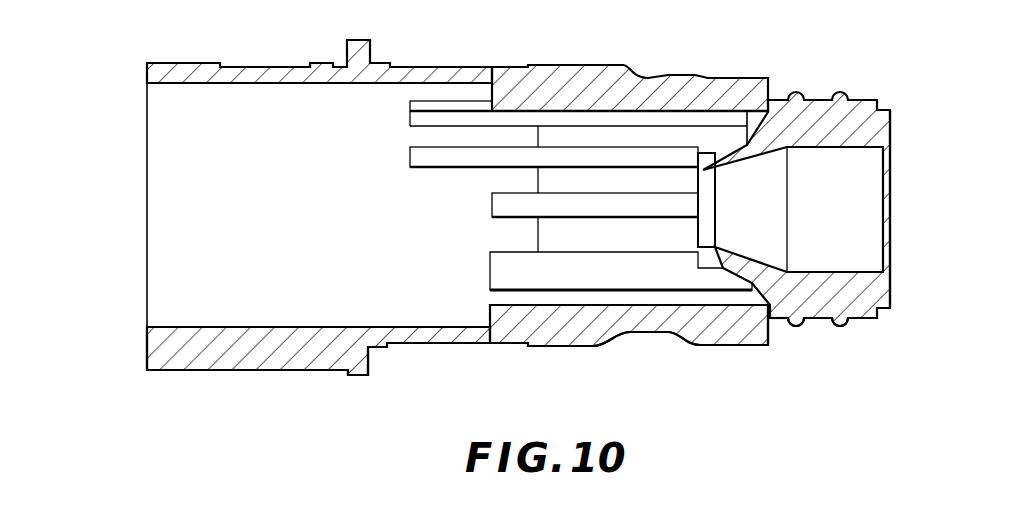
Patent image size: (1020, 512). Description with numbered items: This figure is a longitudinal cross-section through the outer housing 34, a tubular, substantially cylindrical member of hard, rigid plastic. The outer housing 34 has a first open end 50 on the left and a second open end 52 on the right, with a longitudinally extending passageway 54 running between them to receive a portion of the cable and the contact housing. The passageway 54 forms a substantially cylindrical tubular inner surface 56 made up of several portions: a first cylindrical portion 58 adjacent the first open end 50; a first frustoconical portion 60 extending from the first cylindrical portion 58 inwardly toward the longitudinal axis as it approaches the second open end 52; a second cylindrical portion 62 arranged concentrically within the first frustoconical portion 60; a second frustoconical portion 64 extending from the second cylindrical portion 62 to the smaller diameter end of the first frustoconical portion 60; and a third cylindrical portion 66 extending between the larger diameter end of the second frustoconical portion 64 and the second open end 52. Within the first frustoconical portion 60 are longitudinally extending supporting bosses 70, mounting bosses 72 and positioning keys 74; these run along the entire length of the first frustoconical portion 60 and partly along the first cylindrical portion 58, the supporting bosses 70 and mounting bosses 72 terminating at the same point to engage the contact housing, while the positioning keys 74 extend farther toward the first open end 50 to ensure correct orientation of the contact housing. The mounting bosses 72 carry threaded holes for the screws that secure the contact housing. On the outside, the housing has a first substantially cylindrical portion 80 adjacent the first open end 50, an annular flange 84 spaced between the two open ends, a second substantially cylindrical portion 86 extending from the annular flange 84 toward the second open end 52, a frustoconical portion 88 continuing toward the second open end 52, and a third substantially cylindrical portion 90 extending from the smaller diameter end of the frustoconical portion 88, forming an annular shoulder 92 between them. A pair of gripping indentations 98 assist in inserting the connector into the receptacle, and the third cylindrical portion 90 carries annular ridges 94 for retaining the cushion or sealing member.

The outer housing 34 is at (428, 226).
The first open end 50 is at (135, 352).
The second open end 52 is at (901, 272).
The longitudinally extending passageway 54 is at (166, 244).
The tubular inner surface 56 is at (220, 84).
The first cylindrical portion 58 is at (226, 327).
The first frustoconical portion 60 is at (652, 112).
The second cylindrical portion 62 is at (707, 172).
The second frustoconical portion 64 is at (758, 160).
The third cylindrical portion 66 is at (867, 148).
The supporting bosses 70 is at (492, 205).
The mounting bosses 72 is at (490, 270).
The positioning keys 74 is at (410, 158).
The first substantially cylindrical portion 80 is at (208, 371).
The annular flange 84 is at (358, 376).
The second substantially cylindrical portion 86 is at (420, 348).
The frustoconical portion 88 is at (565, 347).
The third substantially cylindrical portion 90 is at (780, 320).
The annular ridges 94 is at (840, 327).
The annular shoulder 92 is at (770, 345).
The gripping indentations 98 is at (647, 333).